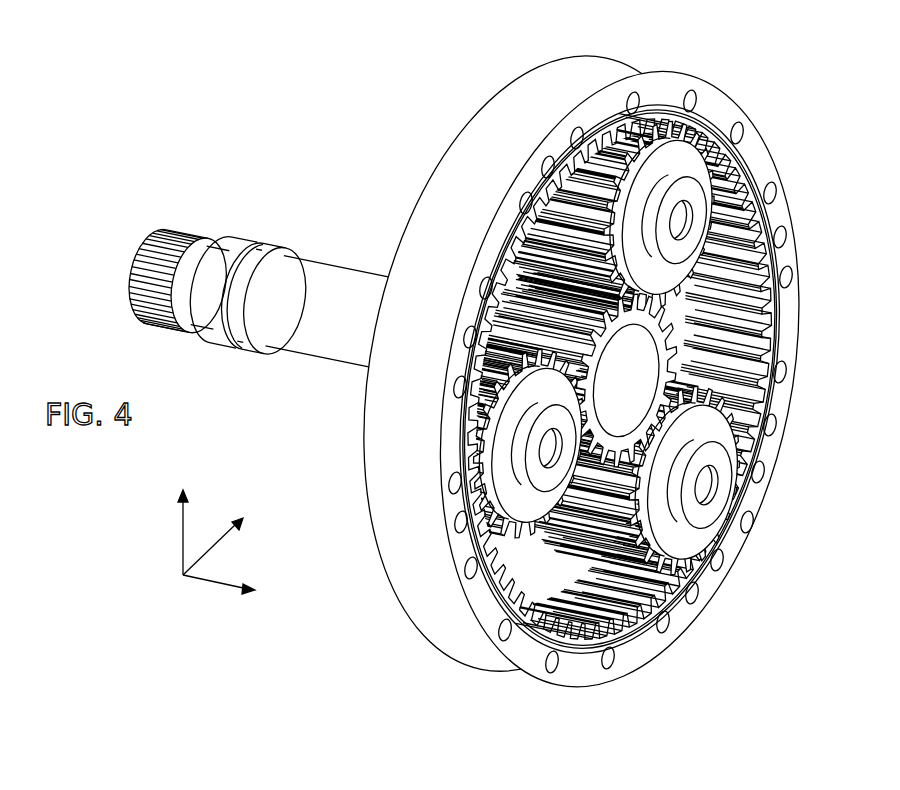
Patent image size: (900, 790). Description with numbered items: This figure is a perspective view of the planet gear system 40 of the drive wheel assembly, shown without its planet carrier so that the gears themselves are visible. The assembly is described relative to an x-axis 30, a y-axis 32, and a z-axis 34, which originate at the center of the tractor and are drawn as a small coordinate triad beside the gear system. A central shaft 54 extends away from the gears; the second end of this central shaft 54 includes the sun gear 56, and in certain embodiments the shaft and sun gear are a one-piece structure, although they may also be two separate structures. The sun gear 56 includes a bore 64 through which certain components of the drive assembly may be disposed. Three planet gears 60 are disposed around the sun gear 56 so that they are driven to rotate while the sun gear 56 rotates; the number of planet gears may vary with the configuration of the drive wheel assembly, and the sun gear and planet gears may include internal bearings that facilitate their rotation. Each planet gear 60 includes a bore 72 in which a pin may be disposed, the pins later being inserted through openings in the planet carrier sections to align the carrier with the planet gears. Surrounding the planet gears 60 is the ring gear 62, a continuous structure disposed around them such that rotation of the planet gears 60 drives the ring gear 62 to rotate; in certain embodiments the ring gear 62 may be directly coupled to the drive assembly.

The x-axis 30 is at (215, 585).
The y-axis 32 is at (182, 536).
The z-axis 34 is at (217, 538).
The planet gear system 40 is at (476, 359).
The central shaft 54 is at (297, 306).
The sun gear 56 is at (619, 379).
The planet gears 60 is at (579, 329).
The ring gear 62 is at (581, 371).
The bore 64 is at (626, 381).
The bore 72 is at (633, 340).